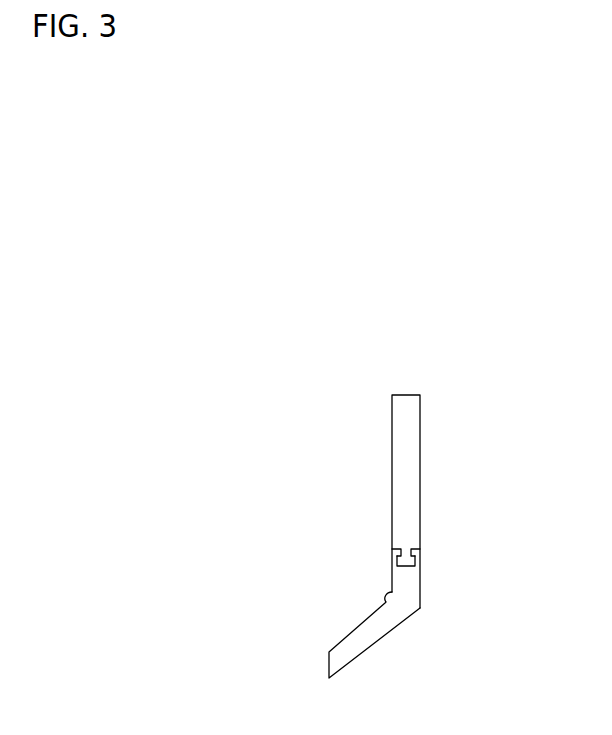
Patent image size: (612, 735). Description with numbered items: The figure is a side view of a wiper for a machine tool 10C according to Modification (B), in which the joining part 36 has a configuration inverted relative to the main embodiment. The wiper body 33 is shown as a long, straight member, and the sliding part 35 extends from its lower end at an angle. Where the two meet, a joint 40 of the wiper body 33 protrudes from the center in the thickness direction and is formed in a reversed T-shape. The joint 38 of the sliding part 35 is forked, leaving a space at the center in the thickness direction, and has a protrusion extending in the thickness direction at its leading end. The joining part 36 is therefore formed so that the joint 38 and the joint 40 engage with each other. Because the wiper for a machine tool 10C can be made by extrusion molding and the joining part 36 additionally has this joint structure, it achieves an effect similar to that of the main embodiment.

The wiper for a machine tool 10C is at (434, 521).
The wiper body 33 is at (410, 490).
The sliding part 35 is at (371, 632).
The joining part 36 is at (429, 567).
The joint 38 is at (396, 551).
The joint 40 is at (407, 570).